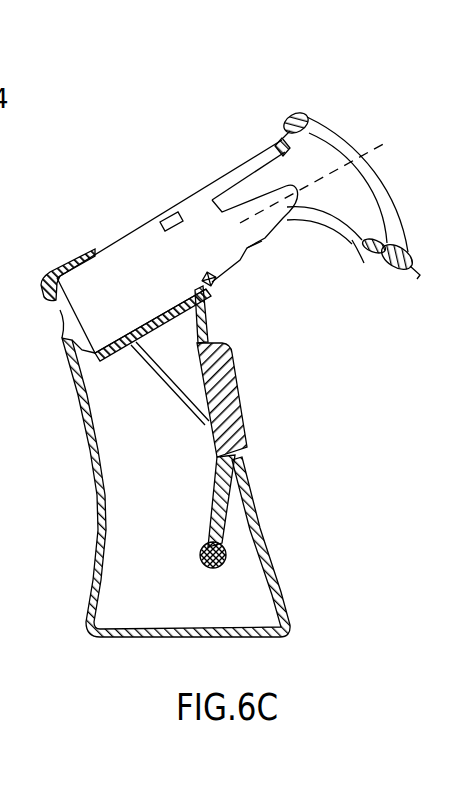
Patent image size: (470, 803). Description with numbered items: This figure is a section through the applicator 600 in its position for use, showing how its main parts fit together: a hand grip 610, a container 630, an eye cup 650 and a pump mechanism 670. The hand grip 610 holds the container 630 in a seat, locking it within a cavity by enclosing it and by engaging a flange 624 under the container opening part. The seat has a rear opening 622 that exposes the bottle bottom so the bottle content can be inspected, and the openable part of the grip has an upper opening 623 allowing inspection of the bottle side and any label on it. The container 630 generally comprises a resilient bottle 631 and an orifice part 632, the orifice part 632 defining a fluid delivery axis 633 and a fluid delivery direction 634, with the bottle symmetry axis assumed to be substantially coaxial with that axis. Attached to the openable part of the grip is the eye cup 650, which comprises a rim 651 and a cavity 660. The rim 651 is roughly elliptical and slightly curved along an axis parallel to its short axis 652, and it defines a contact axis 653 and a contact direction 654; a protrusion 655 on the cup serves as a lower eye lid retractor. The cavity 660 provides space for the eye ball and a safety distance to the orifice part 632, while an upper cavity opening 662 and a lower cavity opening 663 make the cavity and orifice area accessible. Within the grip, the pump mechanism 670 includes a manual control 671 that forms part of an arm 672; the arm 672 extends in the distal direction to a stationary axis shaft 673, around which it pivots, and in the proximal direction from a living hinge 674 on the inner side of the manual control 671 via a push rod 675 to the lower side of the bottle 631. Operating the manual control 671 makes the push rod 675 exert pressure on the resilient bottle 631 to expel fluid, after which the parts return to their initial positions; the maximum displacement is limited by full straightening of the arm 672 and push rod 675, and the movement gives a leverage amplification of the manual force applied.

The applicator 600 is at (186, 136).
The hand grip 610 is at (84, 520).
The rear opening 622 is at (55, 318).
The upper opening 623 is at (163, 222).
The flange 624 is at (216, 287).
The container 630 is at (97, 257).
The bottle 631 is at (141, 306).
The orifice part 632 is at (265, 238).
The fluid delivery axis 633 is at (382, 147).
The fluid delivery direction 634 is at (400, 137).
The eye cup 650 is at (282, 95).
The rim 651 is at (11, 201).
The short axis 652 is at (14, 233).
The contact axis 653 is at (17, 163).
The contact direction 654 is at (23, 130).
The protrusion 655 is at (422, 276).
The cavity 660 is at (365, 210).
The upper cavity opening 662 is at (272, 152).
The lower cavity opening 663 is at (365, 255).
The pump mechanism 670 is at (250, 415).
The manual control 671 is at (236, 383).
The arm 672 is at (208, 515).
The stationary axis shaft 673 is at (200, 563).
The living hinge 674 is at (205, 428).
The push rod 675 is at (157, 372).